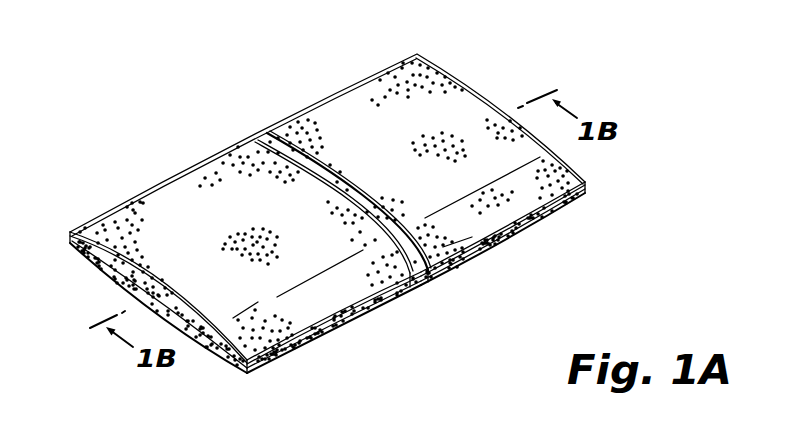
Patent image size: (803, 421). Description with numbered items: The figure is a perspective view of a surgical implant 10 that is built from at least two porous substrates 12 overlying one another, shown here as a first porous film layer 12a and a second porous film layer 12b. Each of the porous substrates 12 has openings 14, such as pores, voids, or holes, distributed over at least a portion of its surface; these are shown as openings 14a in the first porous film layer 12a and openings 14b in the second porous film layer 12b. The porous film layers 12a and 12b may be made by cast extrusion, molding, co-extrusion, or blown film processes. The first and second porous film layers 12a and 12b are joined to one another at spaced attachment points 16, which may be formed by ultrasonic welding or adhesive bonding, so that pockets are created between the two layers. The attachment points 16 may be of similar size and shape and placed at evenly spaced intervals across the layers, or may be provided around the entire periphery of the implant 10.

The surgical implant 10 is at (158, 92).
The porous substrates 12 is at (223, 284).
The first porous film layer 12a is at (314, 311).
The second porous film layer 12b is at (237, 366).
The openings 14 is at (443, 175).
The openings 14a is at (125, 216).
The openings 14b is at (413, 284).
The attachment points 16 is at (253, 134).